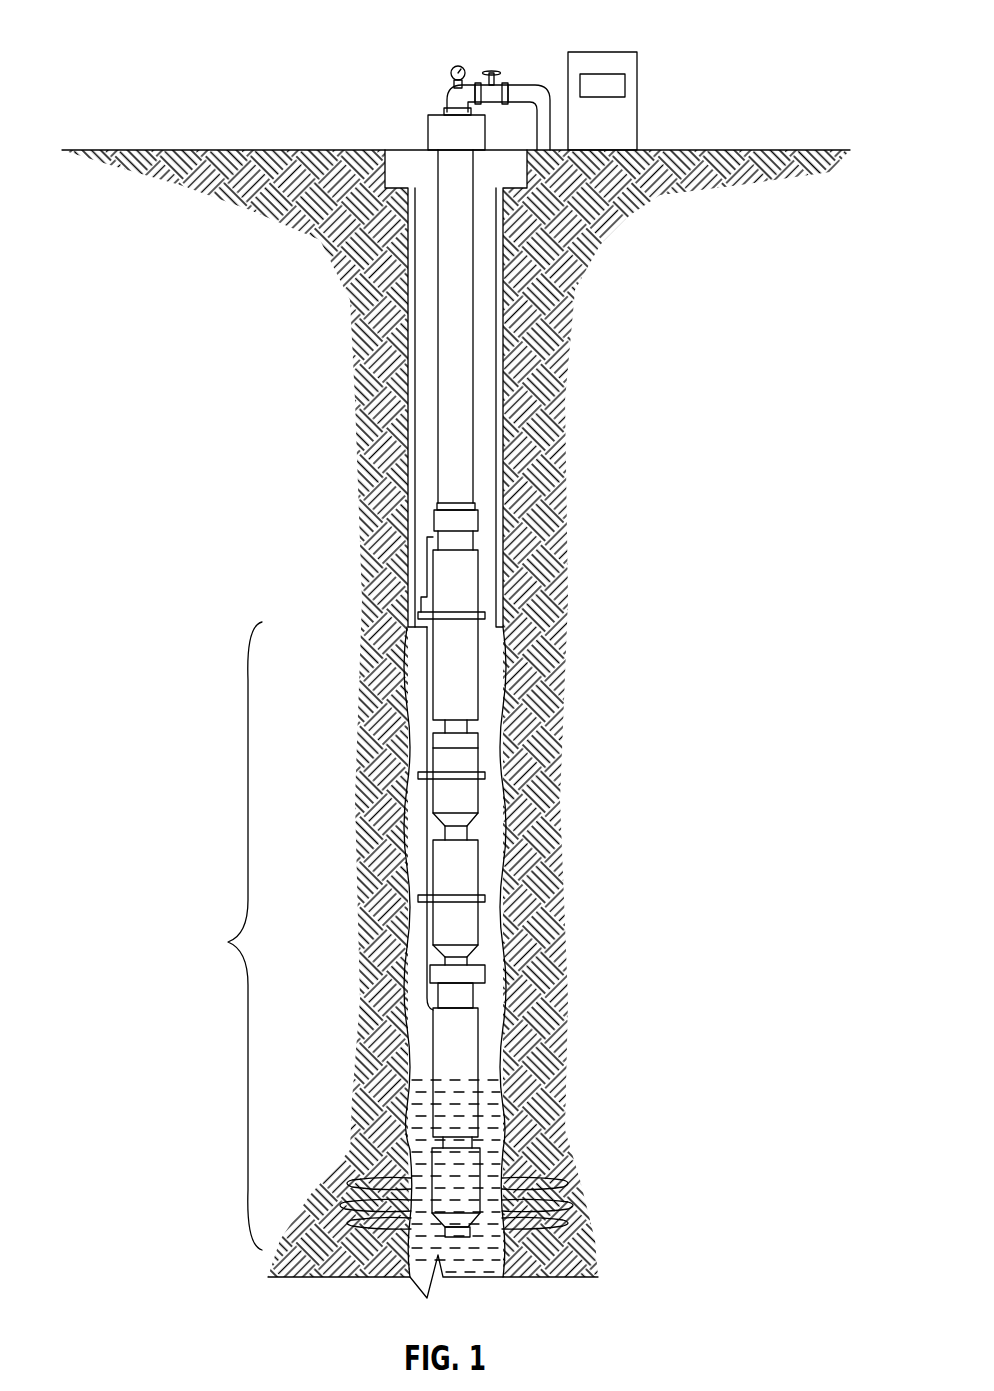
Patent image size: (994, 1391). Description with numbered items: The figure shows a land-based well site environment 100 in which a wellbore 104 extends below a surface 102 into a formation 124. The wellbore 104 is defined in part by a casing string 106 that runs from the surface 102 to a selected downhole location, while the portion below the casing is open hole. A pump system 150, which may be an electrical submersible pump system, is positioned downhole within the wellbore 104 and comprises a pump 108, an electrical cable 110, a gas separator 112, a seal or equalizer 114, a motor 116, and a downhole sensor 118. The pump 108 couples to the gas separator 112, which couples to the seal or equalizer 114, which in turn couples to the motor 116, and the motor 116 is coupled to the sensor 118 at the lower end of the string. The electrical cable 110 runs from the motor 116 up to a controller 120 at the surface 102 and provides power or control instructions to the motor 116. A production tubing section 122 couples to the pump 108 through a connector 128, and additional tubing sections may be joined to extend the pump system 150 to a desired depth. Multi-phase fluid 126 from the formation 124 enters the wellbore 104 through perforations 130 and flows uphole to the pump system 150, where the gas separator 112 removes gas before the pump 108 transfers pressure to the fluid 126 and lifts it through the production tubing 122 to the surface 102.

The well site environment 100 is at (102, 22).
The surface 102 is at (750, 150).
The wellbore 104 is at (510, 380).
The casing string 106 is at (410, 436).
The pump 108 is at (463, 668).
The electrical cable 110 is at (416, 662).
The gas separator 112 is at (447, 760).
The seal or equalizer 114 is at (445, 866).
The motor 116 is at (445, 1080).
The downhole sensor 118 is at (445, 1186).
The controller 120 is at (603, 52).
The production tubing section 122 is at (436, 292).
The formation 124 is at (612, 196).
The fluid 126 is at (487, 1115).
The connector 128 is at (468, 520).
The perforations 130 is at (560, 1184).
The pump system 150 is at (222, 936).